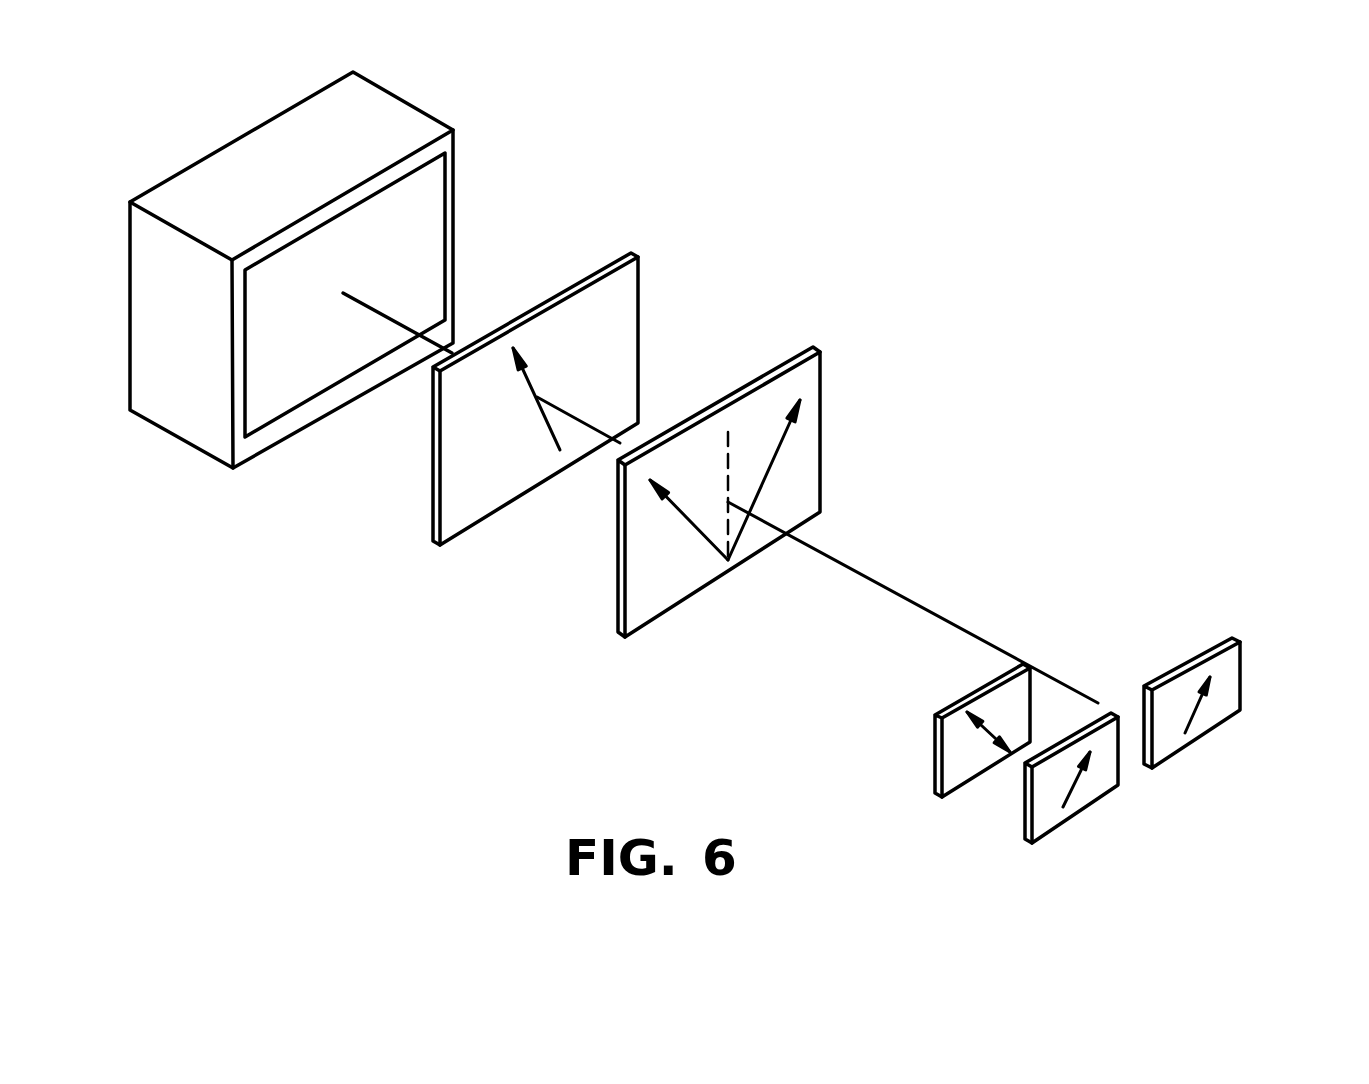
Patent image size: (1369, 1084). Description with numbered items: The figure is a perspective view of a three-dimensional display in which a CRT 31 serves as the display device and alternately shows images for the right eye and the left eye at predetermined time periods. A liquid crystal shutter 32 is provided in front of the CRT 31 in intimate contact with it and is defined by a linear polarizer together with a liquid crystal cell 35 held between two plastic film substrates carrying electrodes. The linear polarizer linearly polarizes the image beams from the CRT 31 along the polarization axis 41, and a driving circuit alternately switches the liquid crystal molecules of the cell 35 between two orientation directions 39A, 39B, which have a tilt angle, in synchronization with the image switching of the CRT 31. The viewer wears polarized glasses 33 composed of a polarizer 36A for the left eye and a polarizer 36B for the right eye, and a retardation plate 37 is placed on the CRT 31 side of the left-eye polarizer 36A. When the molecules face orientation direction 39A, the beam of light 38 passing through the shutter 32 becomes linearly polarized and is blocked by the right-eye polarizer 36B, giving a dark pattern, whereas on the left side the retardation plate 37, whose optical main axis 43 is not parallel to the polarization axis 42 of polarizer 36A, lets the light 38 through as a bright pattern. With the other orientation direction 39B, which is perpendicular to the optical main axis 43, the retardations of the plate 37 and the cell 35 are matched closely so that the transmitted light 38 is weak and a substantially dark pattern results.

The CRT 31 is at (207, 438).
The liquid crystal shutter 32 is at (765, 502).
The liquid crystal cell 35 is at (765, 487).
The light 38 is at (452, 352).
The polarization axis 41 is at (540, 417).
The orientation direction 39A is at (700, 527).
The orientation direction 39B is at (783, 445).
The retardation plate 37 is at (941, 769).
The optical main axis 43 is at (987, 732).
The polarized glasses 33 is at (1187, 791).
The polarizer for the left eye 36A is at (1050, 822).
The polarizer for the right eye 36B is at (1198, 727).
The polarization axis 42 is at (1206, 757).